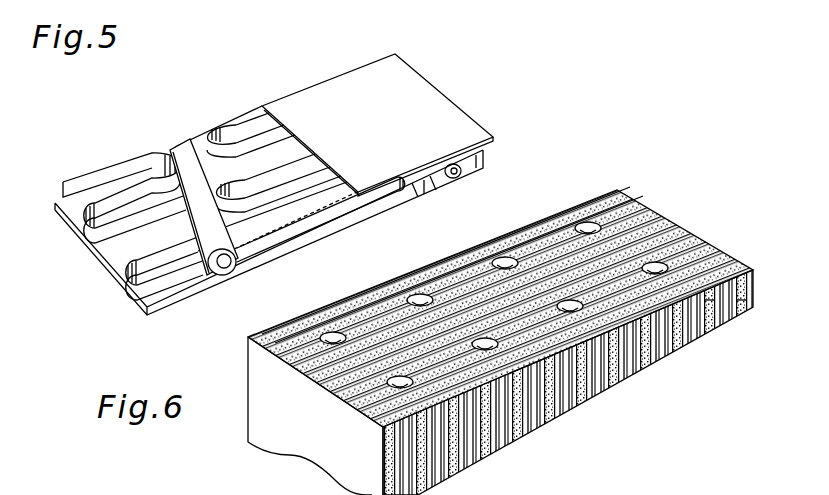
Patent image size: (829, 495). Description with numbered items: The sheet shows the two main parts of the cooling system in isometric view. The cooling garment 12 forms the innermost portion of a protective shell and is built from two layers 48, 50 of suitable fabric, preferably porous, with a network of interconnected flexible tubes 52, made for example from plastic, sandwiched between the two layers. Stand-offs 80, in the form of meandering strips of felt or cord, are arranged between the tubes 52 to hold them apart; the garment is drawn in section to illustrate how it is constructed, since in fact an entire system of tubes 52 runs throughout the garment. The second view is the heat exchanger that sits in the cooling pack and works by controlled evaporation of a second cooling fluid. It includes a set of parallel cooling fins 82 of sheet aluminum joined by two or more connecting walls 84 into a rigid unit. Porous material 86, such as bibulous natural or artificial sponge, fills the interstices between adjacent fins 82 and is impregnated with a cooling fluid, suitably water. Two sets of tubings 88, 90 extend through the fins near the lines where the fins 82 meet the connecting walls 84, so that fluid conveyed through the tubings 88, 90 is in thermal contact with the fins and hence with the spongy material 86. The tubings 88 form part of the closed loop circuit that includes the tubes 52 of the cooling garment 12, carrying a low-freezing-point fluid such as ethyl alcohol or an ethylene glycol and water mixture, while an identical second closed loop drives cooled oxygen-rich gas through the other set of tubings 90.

In FIG. 5, the cooling garment 12 is at (433, 78).
In FIG. 5, the layer 48 is at (118, 268).
In FIG. 5, the layer 50 is at (395, 131).
In FIG. 5, the flexible tubes 52 is at (181, 140).
In FIG. 5, the stand-offs 80 is at (128, 173).
In FIG. 6, the cooling fins 82 is at (552, 222).
In FIG. 6, the connecting walls 84 is at (287, 360).
In FIG. 6, the porous material 86 is at (254, 337).
In FIG. 6, the tubings 88 is at (372, 413).
In FIG. 6, the tubings 90 is at (322, 368).